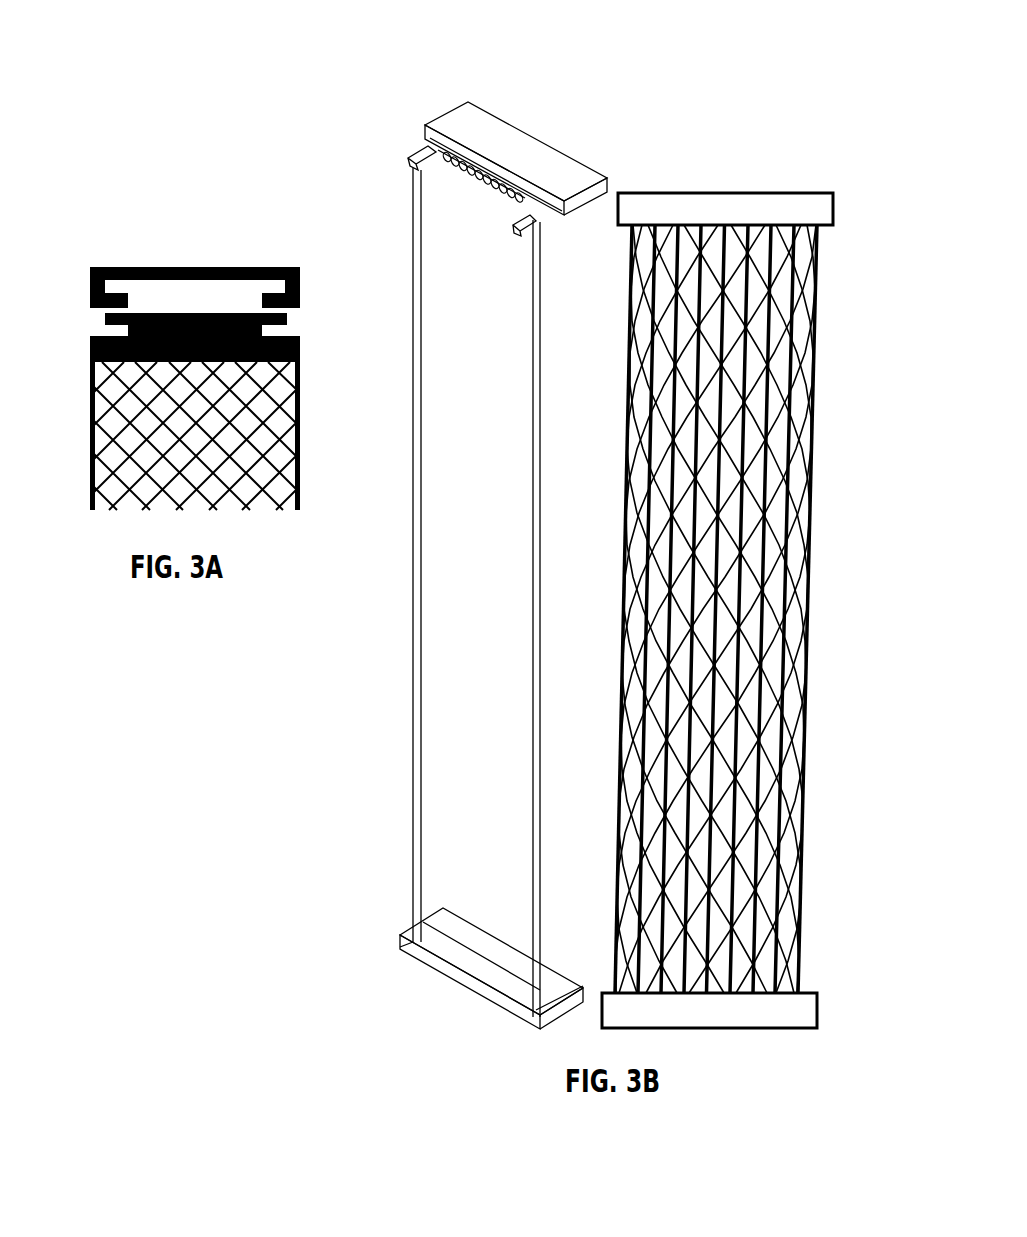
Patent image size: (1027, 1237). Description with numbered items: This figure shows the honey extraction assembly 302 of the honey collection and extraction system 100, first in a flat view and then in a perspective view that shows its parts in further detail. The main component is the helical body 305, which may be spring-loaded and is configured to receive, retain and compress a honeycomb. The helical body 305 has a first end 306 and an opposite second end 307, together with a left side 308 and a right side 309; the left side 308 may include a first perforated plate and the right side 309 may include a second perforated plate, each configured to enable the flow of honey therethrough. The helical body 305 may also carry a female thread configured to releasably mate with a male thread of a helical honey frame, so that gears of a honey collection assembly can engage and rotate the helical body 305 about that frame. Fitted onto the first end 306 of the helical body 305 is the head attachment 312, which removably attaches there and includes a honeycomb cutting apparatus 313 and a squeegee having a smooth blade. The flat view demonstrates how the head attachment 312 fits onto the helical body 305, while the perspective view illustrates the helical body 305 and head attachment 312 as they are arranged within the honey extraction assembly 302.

In FIG. 3A, the honey collection and extraction system 100 is at (227, 115).
In FIG. 3B, the honey collection and extraction system 100 is at (675, 83).
In FIG. 3A, the honey extraction assembly 302 is at (262, 150).
In FIG. 3B, the honey extraction assembly 302 is at (718, 115).
In FIG. 3A, the helical body 305 is at (95, 458).
In FIG. 3B, the helical body 305 is at (832, 405).
In FIG. 3B, the first end 306 is at (628, 537).
In FIG. 3B, the second end 307 is at (808, 623).
In FIG. 3B, the left side 308 is at (662, 200).
In FIG. 3B, the right side 309 is at (735, 1010).
In FIG. 3A, the head attachment 312 is at (125, 262).
In FIG. 3B, the head attachment 312 is at (393, 738).
In FIG. 3B, the honeycomb cutting apparatus 313 is at (415, 627).